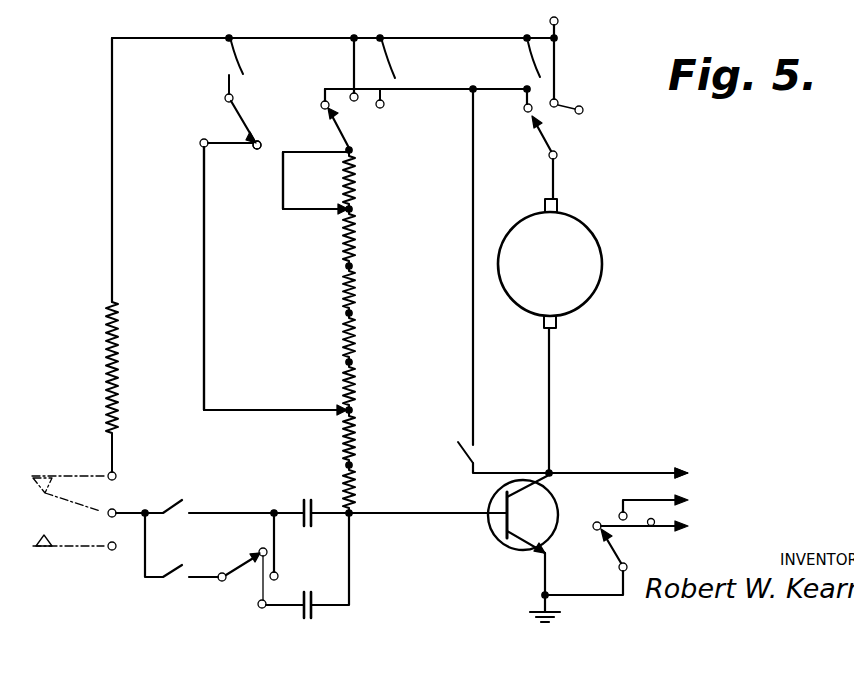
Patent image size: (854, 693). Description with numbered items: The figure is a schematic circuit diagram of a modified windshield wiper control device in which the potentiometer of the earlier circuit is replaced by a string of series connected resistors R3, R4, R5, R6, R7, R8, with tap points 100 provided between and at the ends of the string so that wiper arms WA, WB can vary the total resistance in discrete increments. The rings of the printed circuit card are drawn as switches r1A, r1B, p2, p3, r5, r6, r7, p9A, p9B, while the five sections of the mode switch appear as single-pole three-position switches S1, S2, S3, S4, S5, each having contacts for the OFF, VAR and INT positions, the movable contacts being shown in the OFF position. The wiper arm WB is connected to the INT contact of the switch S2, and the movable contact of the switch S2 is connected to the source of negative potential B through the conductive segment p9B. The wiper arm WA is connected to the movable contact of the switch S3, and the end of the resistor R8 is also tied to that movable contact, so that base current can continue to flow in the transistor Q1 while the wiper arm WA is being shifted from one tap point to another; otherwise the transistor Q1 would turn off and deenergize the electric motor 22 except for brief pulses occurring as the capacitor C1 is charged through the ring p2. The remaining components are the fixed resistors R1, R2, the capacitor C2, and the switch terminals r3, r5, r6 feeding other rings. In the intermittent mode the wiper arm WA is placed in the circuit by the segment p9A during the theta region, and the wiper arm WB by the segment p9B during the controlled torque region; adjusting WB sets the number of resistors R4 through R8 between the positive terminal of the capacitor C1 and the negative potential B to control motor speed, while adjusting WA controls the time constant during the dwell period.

The source of negative potential B is at (568, 24).
The conductive segment r9B p9B is at (254, 67).
The conductive segment r9A p9A is at (406, 70).
The switch S2 is at (233, 121).
The INT contact INT is at (206, 143).
The OFF contact OFF is at (275, 136).
The switch S3 is at (352, 94).
The switch S4 is at (553, 120).
The electric motor 22 is at (603, 258).
The wiper arm WA is at (316, 180).
The wiper arm WB is at (270, 278).
The resistor R8 is at (356, 182).
The resistor R7 is at (356, 240).
The resistor R6 is at (356, 294).
The resistor R5 is at (356, 343).
The resistor R4 is at (356, 389).
The resistor R3 is at (356, 440).
The resistor R2 is at (356, 492).
The resistor R1 is at (128, 387).
The tap points 100 is at (372, 360).
The ring r2 p2 is at (126, 476).
The ring r3 p3 is at (126, 540).
The switch r1B is at (209, 500).
The switch r1A is at (181, 545).
The switch S1 is at (248, 560).
The capacitor C1 is at (311, 502).
The capacitor C2 is at (307, 565).
The transistor Q1 is at (558, 514).
The switch r7 is at (455, 460).
The switch r6 is at (630, 474).
The switch r3 is at (665, 505).
The switch r5 is at (656, 527).
The switch S5 is at (619, 546).